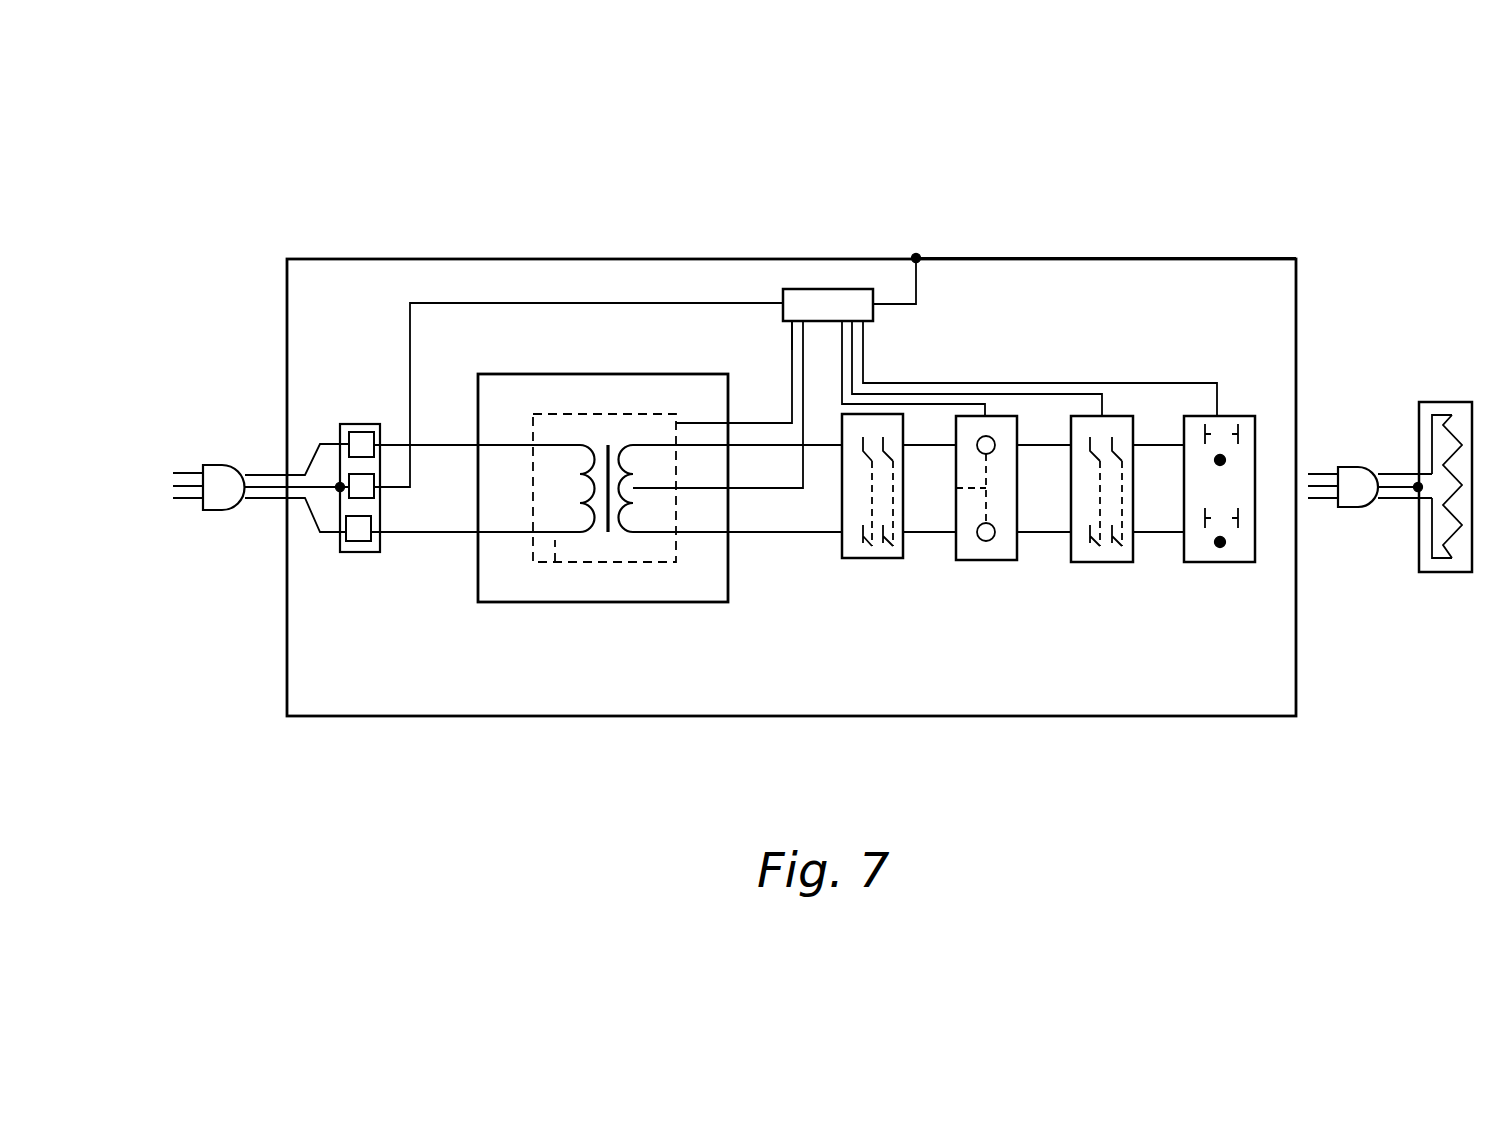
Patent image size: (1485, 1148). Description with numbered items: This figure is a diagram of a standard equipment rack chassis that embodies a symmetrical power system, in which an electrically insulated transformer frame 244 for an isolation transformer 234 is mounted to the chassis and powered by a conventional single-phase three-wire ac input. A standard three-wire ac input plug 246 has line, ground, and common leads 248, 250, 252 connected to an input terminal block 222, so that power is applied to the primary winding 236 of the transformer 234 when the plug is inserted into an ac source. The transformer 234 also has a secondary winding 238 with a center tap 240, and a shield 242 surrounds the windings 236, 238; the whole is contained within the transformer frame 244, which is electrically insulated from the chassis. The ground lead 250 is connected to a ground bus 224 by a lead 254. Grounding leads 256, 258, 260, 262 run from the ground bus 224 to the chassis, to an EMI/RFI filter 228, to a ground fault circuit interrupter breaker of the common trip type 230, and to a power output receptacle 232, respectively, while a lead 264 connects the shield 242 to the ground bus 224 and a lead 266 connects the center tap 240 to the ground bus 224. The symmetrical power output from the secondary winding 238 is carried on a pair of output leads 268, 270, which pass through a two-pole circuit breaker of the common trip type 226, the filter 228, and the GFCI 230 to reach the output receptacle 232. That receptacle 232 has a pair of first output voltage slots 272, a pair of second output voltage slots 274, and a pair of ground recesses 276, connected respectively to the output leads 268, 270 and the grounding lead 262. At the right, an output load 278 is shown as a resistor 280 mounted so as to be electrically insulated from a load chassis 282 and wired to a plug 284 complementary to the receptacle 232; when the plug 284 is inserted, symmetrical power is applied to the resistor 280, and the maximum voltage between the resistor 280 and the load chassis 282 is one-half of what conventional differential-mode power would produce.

The input terminal block 222 is at (358, 423).
The ground bus 224 is at (818, 289).
The 2 pole circuit breaker of the common trip type 226 is at (903, 548).
The EMI/RFI filter 228 is at (1015, 548).
The ground fault circuit interrupter breaker of the common trip type 230 is at (1110, 563).
The power output receptacle 232 is at (1232, 563).
The transformer 234 is at (460, 575).
The primary winding 236 is at (590, 533).
The secondary winding 238 is at (633, 533).
The center tap 240 is at (660, 490).
The shield 242 is at (555, 562).
The transformer frame 244 is at (490, 602).
The 3 wire ac input plug 246 is at (228, 510).
The line lead 248 is at (263, 475).
The ground lead 250 is at (279, 489).
The common lead 252 is at (261, 499).
The lead 254 is at (470, 303).
The grounding lead 256 is at (916, 290).
The grounding lead 258 is at (970, 415).
The grounding lead 260 is at (1080, 393).
The grounding lead 262 is at (1173, 383).
The grounding lead 264 is at (790, 350).
The lead 266 is at (803, 383).
The output lead 268 is at (777, 534).
The output lead 270 is at (826, 447).
The first output voltage slots 272 is at (1240, 437).
The second output voltage slots 274 is at (1207, 435).
The ground recesses 276 is at (1224, 459).
The output load 278 is at (1437, 403).
The resistor 280 is at (1457, 545).
The load chassis 282 is at (1418, 572).
The plug 284 is at (1350, 470).